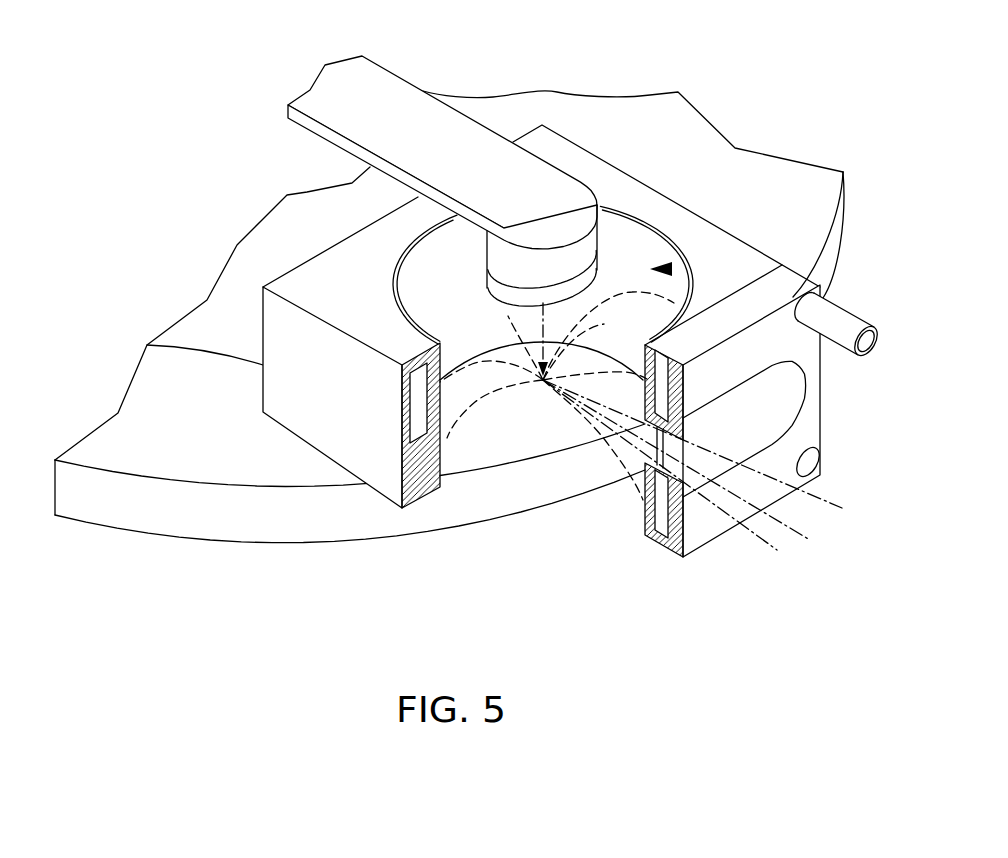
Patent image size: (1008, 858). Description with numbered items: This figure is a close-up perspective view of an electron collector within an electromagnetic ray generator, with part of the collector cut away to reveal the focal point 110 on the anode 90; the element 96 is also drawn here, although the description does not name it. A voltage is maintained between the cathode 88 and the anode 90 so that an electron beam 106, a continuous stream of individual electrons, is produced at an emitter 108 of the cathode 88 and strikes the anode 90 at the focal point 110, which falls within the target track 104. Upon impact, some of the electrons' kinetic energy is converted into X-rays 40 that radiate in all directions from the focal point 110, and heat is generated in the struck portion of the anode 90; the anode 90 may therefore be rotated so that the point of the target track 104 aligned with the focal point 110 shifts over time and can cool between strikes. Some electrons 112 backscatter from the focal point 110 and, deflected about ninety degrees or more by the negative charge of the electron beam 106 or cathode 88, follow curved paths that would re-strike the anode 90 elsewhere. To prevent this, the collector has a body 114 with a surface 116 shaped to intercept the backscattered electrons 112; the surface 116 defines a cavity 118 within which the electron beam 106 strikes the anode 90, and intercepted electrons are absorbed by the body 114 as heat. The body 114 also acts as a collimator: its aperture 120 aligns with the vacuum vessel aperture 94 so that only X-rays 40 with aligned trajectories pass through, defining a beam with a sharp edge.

The X-rays 40 is at (766, 528).
The cathode 88 is at (560, 180).
The anode 90 is at (120, 500).
The aperture 94 is at (204, 421).
The arm 96 is at (387, 85).
The target track 104 is at (110, 448).
The electron beam 106 is at (528, 322).
The emitter 108 is at (569, 303).
The focal point 110 is at (543, 385).
The backscattered electrons 112 is at (482, 410).
The body 114 is at (567, 140).
The surface 116 is at (637, 242).
The cavity 118 is at (672, 268).
The aperture 120 is at (804, 385).